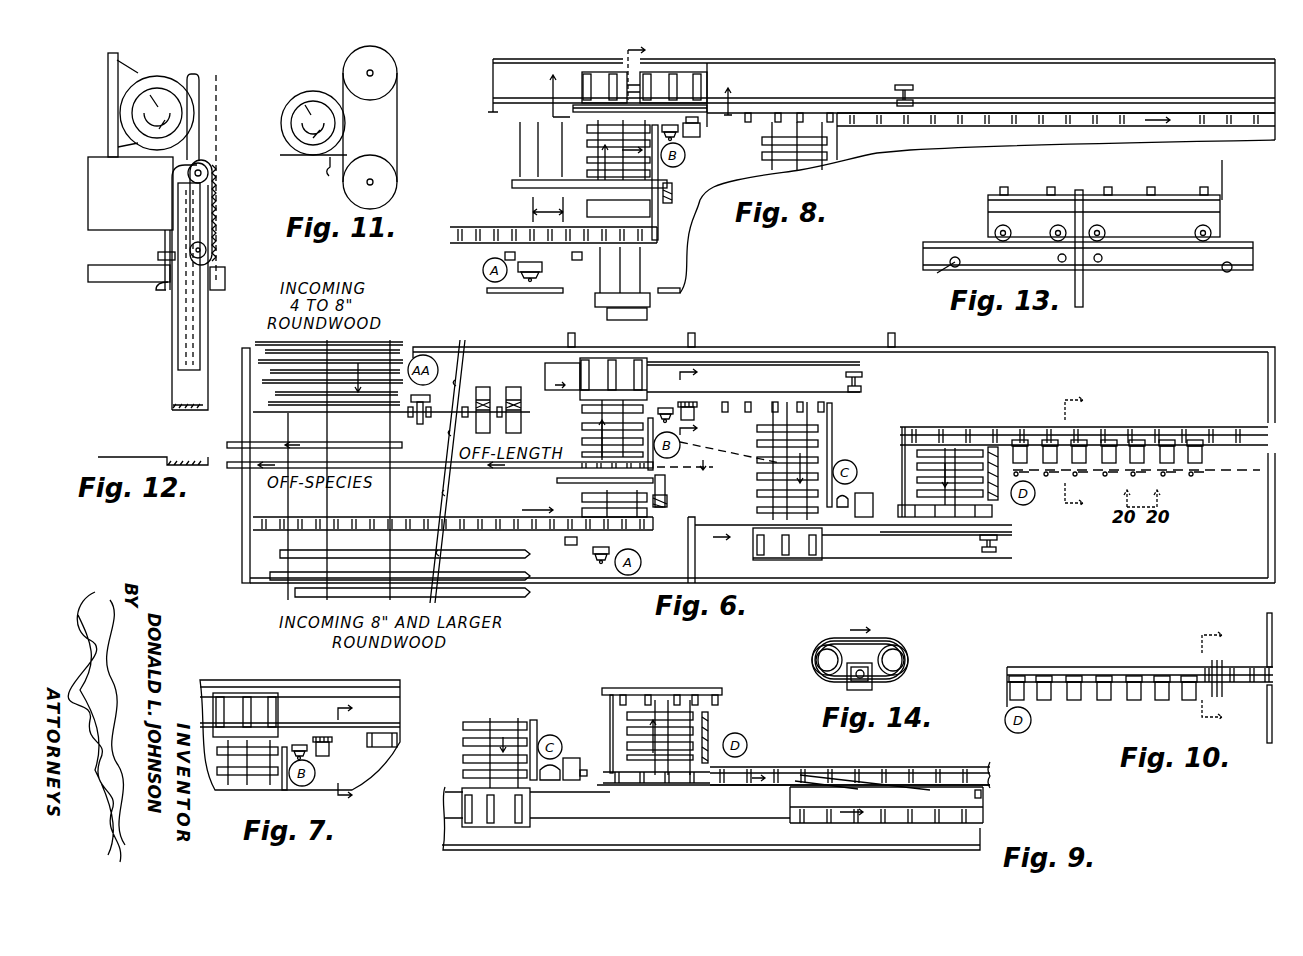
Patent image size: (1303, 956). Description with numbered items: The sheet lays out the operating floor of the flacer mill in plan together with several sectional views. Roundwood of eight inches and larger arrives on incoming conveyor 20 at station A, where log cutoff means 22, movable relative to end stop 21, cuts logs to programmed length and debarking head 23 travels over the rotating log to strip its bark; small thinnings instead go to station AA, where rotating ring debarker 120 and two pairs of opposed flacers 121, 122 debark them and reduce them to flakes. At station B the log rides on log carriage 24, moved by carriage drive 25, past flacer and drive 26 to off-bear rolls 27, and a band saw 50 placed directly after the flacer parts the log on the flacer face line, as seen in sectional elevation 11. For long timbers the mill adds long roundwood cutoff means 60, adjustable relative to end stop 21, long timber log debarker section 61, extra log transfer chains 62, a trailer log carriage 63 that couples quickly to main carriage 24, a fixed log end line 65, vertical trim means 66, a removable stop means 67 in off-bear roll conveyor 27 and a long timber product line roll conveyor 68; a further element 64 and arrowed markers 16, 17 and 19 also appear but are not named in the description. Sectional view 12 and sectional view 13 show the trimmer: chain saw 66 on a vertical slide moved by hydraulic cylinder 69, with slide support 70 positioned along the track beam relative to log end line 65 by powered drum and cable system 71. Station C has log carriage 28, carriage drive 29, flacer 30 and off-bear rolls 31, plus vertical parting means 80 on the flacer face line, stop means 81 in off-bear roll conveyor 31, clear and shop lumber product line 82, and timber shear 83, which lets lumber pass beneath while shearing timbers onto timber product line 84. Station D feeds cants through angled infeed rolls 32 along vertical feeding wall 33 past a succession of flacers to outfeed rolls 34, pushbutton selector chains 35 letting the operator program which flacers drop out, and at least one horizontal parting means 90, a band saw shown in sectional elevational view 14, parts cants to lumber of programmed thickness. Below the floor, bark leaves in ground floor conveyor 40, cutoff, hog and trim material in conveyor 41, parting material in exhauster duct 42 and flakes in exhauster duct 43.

In FIG. 7, the sectional elevation 11 is at (335, 756).
In FIG. 8, the sectional elevational view 12 is at (622, 110).
In FIG. 8, the sectional view 13 is at (642, 96).
In FIG. 10, the sectional elevational view 14 is at (1199, 675).
In FIG. 6, the sorting conveyor 16 is at (718, 466).
In FIG. 6, the section line 17- 17 is at (702, 404).
In FIG. 6, the section line 19- 19 is at (1063, 452).
In FIG. 6, the incoming conveyor 20 is at (475, 597).
In FIG. 8, the end stop 21 is at (657, 236).
In FIG. 6, the end stop 21 is at (653, 524).
In FIG. 8, the log cutoff means 22 is at (582, 256).
In FIG. 6, the log cutoff means 22 is at (577, 541).
In FIG. 6, the debarking head 23 is at (667, 497).
In FIG. 8, the log carriage 24 is at (640, 95).
In FIG. 6, the log carriage 24 is at (647, 378).
In FIG. 8, the carriage drive 25 is at (915, 93).
In FIG. 6, the carriage drive 25 is at (862, 380).
In FIG. 6, the flacer and drive 26 is at (697, 410).
In FIG. 7, the flacer and drive 26 is at (322, 756).
In FIG. 8, the off-bear rolls 27 is at (745, 125).
In FIG. 6, the off-bear rolls 27 is at (742, 415).
In FIG. 6, the log carriage 28 is at (822, 548).
In FIG. 6, the carriage drive 29 is at (997, 545).
In FIG. 6, the flacer 30 is at (870, 493).
In FIG. 9, the flacer 30 is at (563, 782).
In FIG. 6, the off-bear rolls 31 is at (898, 510).
In FIG. 9, the off-bear rolls 31 is at (640, 790).
In FIG. 6, the angled infeed rolls 32 is at (975, 427).
In FIG. 6, the vertical feeding wall 33 is at (1000, 427).
In FIG. 6, the outfeed rolls 34 is at (1240, 427).
In FIG. 6, the pushbutton selector chains 35 is at (998, 495).
In FIG. 6, the ground floor conveyor 40 is at (575, 340).
In FIG. 6, the conveyor 41 is at (695, 340).
In FIG. 6, the exhauster duct 42 is at (895, 340).
In FIG. 6, the exhauster duct 43 is at (1235, 472).
In FIG. 8, the band saw 50 is at (706, 118).
In FIG. 7, the band saw 50 is at (348, 735).
In FIG. 8, the long roundwood cutoff means 60 is at (515, 256).
In FIG. 8, the long timber log debarker section 61 is at (591, 207).
In FIG. 8, the extra log transfer chains 62 is at (552, 162).
In FIG. 8, the trailer log carriage 63 is at (604, 87).
In FIG. 8, the bundling head 64 is at (667, 87).
In FIG. 8, the fixed log end line 65 is at (700, 72).
In FIG. 13, the fixed log end line 65 is at (1222, 180).
In FIG. 12, the vertical trim means 66 is at (214, 174).
In FIG. 13, the vertical trim means 66 is at (1083, 200).
In FIG. 8, the stop means 67 is at (835, 112).
In FIG. 8, the long timber product line roll conveyor 68 is at (1138, 112).
In FIG. 12, the hydraulic cylinder 69 is at (200, 318).
In FIG. 12, the slide support 70 is at (165, 290).
In FIG. 13, the slide support 70 is at (1098, 270).
In FIG. 13, the powered drum and cable system 71 is at (985, 270).
In FIG. 9, the vertical parting means 80 is at (596, 774).
In FIG. 9, the stop means 81 is at (713, 787).
In FIG. 9, the clear and shop lumber product line 82 is at (925, 767).
In FIG. 9, the timber shear 83 is at (855, 776).
In FIG. 9, the timber product line 84 is at (893, 823).
In FIG. 10, the horizontal parting means 90 is at (1225, 693).
In FIG. 6, the rotating ring debarker 120 is at (415, 425).
In FIG. 6, the opposed flacers 121 is at (483, 387).
In FIG. 6, the opposed flacers 122 is at (513, 387).